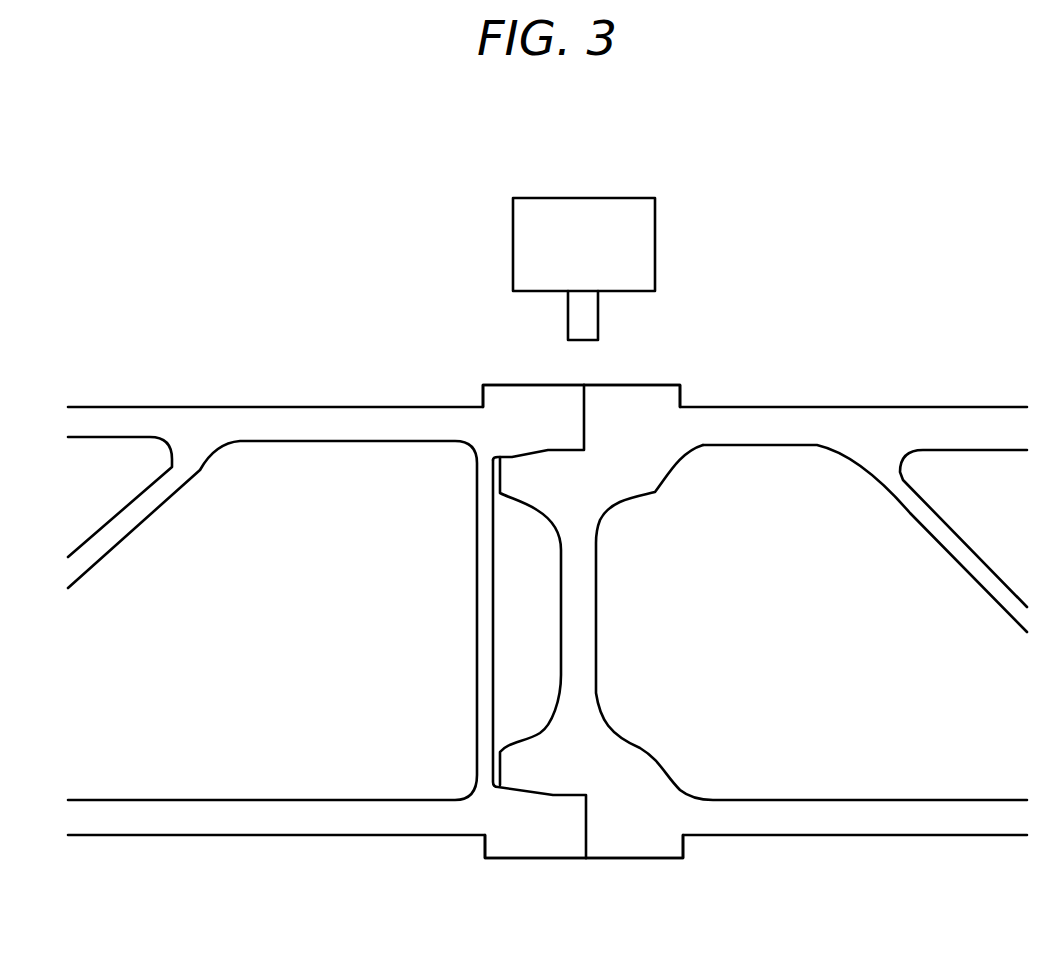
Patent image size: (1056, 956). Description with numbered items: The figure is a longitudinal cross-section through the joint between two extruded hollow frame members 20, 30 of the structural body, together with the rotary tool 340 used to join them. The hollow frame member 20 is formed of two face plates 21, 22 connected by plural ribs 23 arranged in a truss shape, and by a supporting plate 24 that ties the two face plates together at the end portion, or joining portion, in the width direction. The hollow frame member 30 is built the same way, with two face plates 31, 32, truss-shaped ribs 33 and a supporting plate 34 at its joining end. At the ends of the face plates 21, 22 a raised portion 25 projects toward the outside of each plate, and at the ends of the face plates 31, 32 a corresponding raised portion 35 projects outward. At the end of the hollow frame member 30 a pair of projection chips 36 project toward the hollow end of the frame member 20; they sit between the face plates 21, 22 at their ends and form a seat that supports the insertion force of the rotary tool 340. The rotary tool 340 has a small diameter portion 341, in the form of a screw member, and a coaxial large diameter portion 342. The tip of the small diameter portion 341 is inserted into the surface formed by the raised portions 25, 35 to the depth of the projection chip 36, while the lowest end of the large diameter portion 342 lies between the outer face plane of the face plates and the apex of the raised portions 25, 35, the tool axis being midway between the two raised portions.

The hollow frame member 20 is at (327, 584).
The face plate 21 is at (297, 418).
The face plate 22 is at (255, 822).
The ribs 23 is at (108, 540).
The supporting plate 24 is at (500, 621).
The raised portion 25 is at (505, 397).
The hollow frame member 30 is at (805, 591).
The face plate 31 is at (803, 418).
The face plate 32 is at (880, 822).
The ribs 33 is at (917, 513).
The supporting plate 34 is at (595, 630).
The raised portion 35 is at (668, 397).
The projection chips 36 is at (538, 487).
The rotary tool 340 is at (604, 216).
The small diameter portion 341 is at (590, 305).
The large diameter portion 342 is at (640, 228).